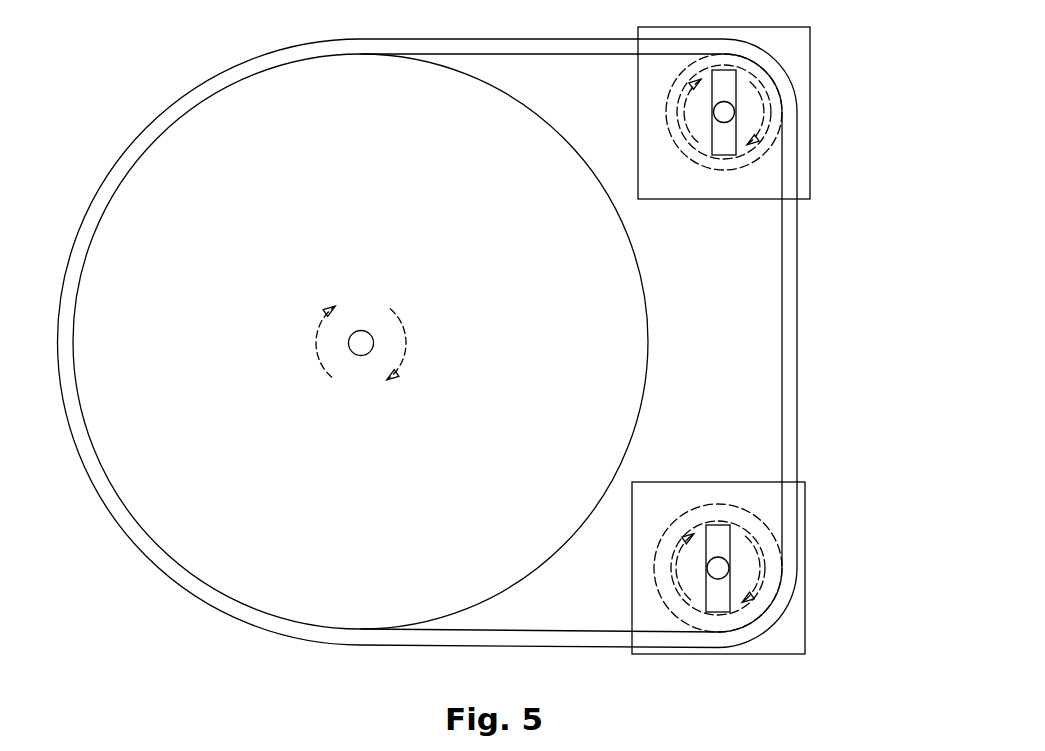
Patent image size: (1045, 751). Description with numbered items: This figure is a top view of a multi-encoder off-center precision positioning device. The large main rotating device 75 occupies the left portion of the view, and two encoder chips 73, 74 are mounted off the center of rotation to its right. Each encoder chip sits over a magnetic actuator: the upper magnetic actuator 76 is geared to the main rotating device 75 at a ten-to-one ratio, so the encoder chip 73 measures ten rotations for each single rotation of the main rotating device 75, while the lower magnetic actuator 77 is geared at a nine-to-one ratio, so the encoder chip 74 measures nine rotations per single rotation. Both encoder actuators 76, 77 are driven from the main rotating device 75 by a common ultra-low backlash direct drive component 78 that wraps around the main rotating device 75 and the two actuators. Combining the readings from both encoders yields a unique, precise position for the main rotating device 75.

The encoder chip 73 is at (812, 60).
The encoder chip 74 is at (805, 611).
The main rotating device 75 is at (648, 330).
The magnetic actuator 76 is at (668, 120).
The magnetic actuator 77 is at (655, 568).
The ultra-low backlash direct drive component 78 is at (783, 407).